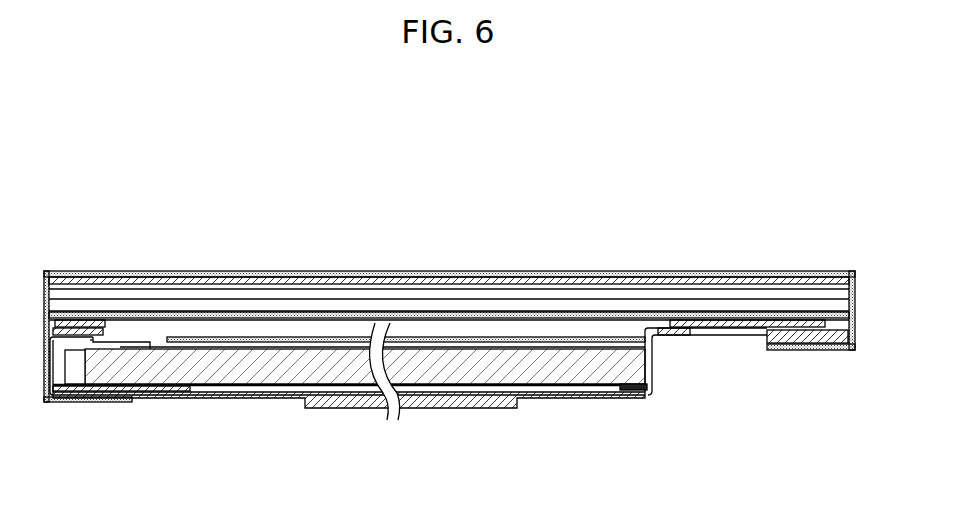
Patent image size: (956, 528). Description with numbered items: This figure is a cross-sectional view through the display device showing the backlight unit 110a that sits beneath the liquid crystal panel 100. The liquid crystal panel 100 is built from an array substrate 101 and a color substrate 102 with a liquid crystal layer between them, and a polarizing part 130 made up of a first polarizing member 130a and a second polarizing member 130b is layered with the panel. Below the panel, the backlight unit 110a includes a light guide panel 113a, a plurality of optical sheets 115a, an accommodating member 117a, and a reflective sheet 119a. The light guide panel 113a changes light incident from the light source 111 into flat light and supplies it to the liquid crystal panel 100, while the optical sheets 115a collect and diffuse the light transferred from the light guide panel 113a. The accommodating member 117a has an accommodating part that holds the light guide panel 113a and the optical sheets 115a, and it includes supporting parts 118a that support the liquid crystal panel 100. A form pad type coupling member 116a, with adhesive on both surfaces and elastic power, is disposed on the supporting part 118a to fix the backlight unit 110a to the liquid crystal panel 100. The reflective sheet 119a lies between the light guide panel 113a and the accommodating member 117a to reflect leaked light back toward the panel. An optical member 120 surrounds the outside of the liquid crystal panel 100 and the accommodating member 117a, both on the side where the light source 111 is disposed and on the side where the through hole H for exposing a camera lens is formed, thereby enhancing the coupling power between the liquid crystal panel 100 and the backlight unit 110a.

The liquid crystal panel 100 is at (449, 245).
The array substrate 101 is at (345, 213).
The color substrate 102 is at (333, 292).
The polarizing part 130 is at (449, 252).
The first polarizing member 130a is at (530, 225).
The second polarizing member 130b is at (523, 280).
The coupling member 116a is at (76, 322).
The supporting part 118a is at (106, 332).
The through hole H is at (728, 333).
The optical member 120 is at (108, 402).
The backlight unit 110a is at (408, 415).
The light source 111 is at (76, 384).
The light guide panel 113a is at (565, 370).
The optical sheets 115a is at (472, 342).
The accommodating member 117a is at (570, 458).
The reflective sheet 119a is at (190, 391).